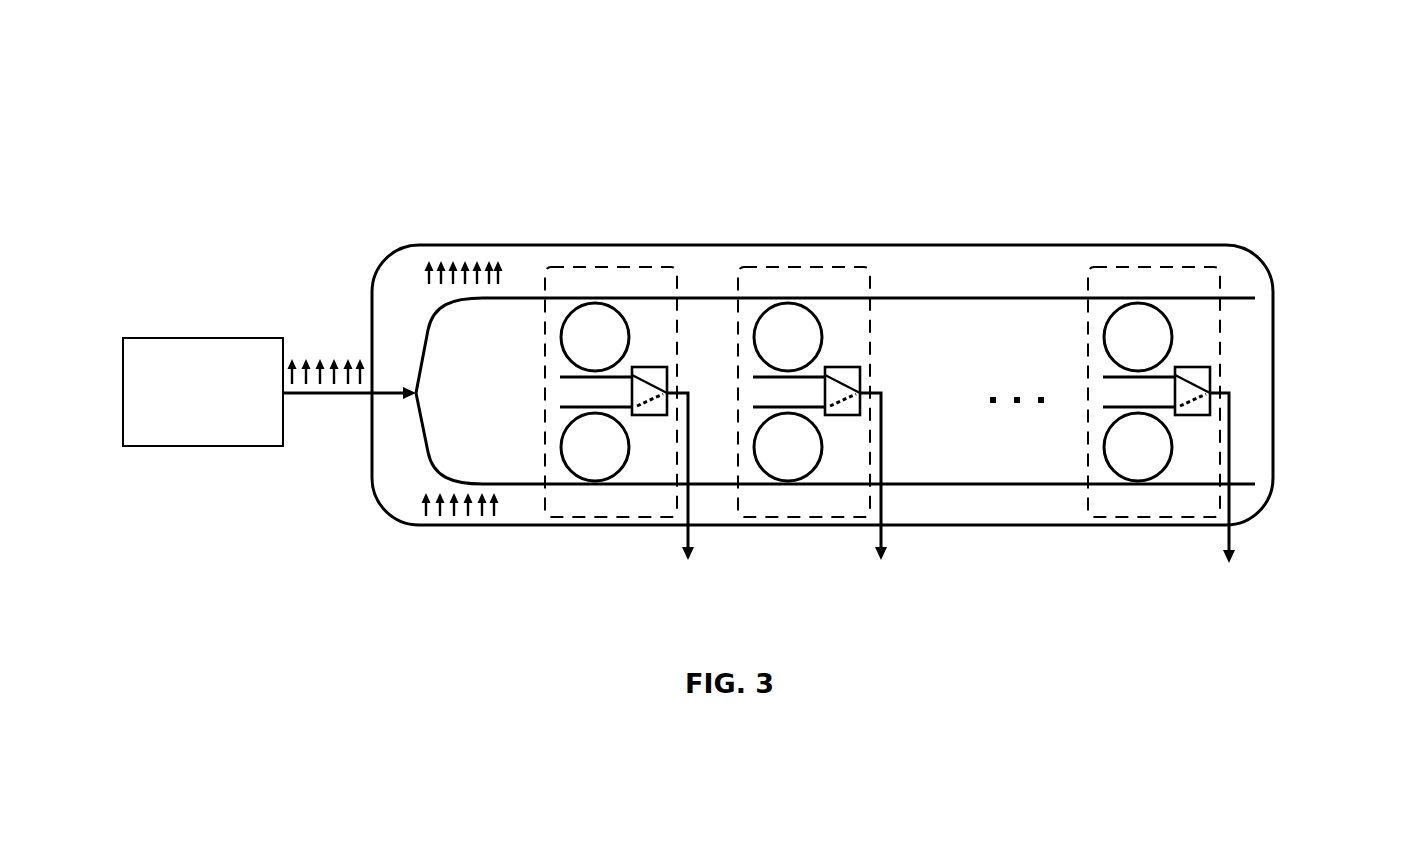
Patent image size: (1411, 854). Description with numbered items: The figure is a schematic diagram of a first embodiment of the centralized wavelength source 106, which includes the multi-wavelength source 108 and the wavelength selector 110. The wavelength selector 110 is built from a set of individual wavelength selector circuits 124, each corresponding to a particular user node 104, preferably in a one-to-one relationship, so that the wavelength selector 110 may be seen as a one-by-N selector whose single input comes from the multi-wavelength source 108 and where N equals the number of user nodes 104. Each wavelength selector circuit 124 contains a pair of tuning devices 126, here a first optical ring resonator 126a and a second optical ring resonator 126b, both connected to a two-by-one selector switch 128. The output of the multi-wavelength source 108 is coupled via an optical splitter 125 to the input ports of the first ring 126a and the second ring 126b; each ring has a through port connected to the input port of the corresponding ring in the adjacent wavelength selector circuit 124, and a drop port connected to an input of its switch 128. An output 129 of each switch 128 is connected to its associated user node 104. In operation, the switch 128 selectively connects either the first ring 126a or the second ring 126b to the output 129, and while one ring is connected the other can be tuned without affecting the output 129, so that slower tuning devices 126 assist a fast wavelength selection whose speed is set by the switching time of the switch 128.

The user node 104 is at (963, 571).
The centralized wavelength source 106 is at (1050, 92).
The multi-wavelength source 108 is at (187, 423).
The wavelength selector 110 is at (1274, 450).
The wavelength selector circuit 124 is at (588, 267).
The optical splitter 125 is at (421, 385).
The tuning device 126 is at (557, 307).
The first optical ring resonator 126a is at (600, 318).
The second optical ring resonator 126b is at (598, 470).
The 2×1 selector switch 128 is at (660, 367).
The output 129 is at (688, 457).